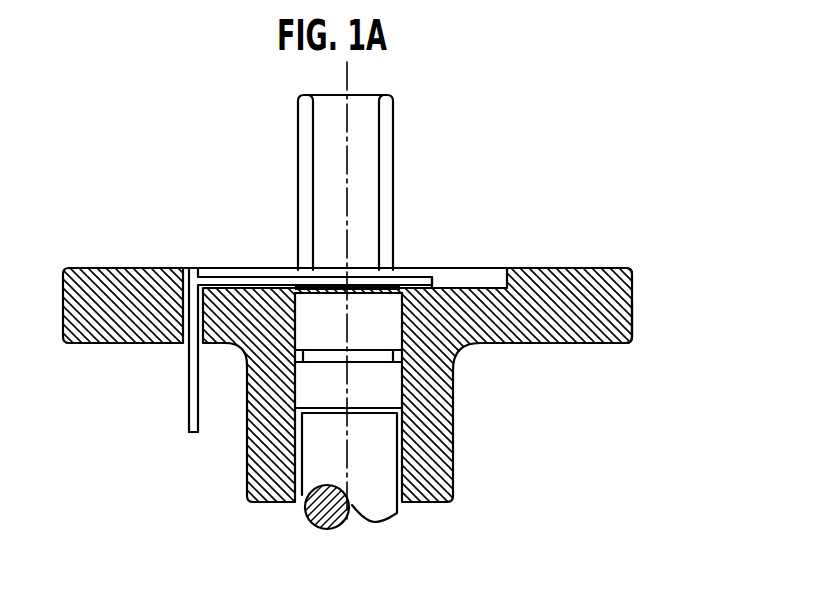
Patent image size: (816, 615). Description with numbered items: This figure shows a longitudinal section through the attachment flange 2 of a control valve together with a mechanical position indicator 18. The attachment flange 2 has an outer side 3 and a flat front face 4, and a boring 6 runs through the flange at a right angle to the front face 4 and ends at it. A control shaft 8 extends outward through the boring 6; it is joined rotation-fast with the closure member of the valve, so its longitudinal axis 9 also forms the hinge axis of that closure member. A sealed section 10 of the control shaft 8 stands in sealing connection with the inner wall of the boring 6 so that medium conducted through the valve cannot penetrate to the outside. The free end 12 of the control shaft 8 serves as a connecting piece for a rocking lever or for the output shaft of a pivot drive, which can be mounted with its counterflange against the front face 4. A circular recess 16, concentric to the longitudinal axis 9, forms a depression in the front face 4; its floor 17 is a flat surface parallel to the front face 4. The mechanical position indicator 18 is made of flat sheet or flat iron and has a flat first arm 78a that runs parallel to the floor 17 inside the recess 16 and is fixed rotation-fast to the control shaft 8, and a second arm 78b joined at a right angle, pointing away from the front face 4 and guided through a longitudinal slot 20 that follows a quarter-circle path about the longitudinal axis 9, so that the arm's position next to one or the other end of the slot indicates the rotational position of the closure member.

The attachment flange 2 is at (620, 302).
The outer side 3 is at (630, 340).
The front face 4 is at (600, 268).
The boring 6 is at (297, 502).
The control shaft 8 is at (382, 503).
The longitudinal axis 9 is at (350, 522).
The sealed section 10 is at (310, 393).
The free end 12 is at (362, 178).
The recess 16 is at (483, 278).
The floor 17 is at (446, 287).
The mechanical position indicator 18 is at (193, 357).
The longitudinal slot 20 is at (190, 268).
The bracket horizontal leg 78a is at (260, 277).
The bracket vertical leg 78b is at (193, 413).